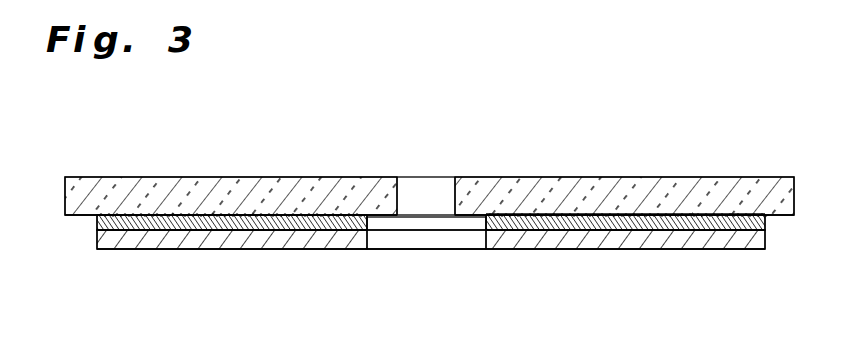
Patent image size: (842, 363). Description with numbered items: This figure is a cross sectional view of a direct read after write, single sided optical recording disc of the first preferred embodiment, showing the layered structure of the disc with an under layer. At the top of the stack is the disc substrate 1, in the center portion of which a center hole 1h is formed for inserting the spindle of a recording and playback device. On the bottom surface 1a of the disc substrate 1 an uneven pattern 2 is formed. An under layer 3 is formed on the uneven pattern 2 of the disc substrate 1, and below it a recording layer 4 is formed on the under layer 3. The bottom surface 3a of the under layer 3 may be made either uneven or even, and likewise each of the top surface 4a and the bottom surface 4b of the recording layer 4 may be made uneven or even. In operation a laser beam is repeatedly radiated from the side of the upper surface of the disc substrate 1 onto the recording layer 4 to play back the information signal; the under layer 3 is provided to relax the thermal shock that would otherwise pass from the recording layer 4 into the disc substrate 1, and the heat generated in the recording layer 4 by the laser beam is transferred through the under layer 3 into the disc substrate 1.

The disc substrate 1 is at (595, 195).
The bottom surface of the disc substrate 1a is at (474, 215).
The center hole 1h is at (412, 178).
The uneven pattern 2 is at (677, 215).
The under layer 3 is at (298, 222).
The bottom surface of the under layer 3a is at (550, 220).
The recording layer 4 is at (196, 240).
The top surface of the recording layer 4a is at (625, 232).
The bottom surface of the recording layer 4b is at (687, 249).